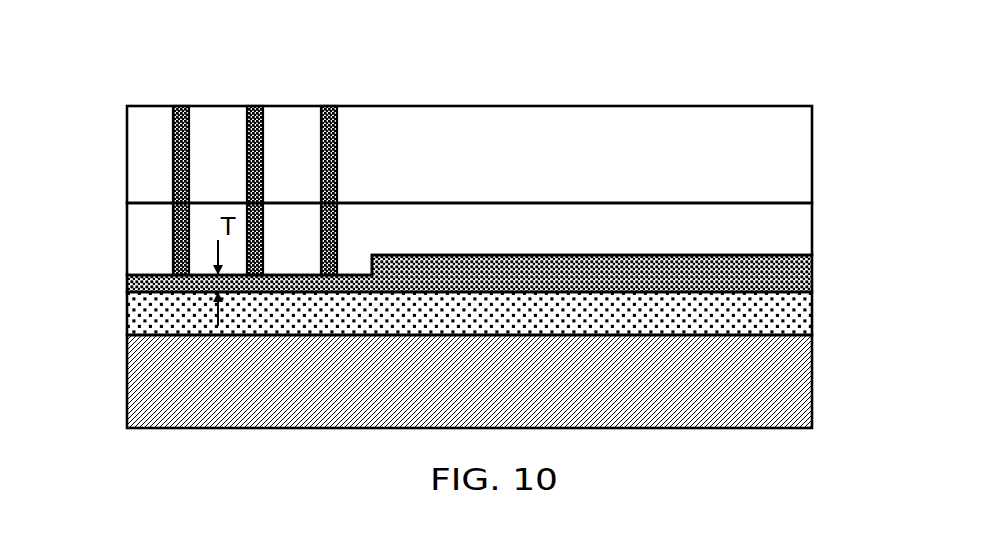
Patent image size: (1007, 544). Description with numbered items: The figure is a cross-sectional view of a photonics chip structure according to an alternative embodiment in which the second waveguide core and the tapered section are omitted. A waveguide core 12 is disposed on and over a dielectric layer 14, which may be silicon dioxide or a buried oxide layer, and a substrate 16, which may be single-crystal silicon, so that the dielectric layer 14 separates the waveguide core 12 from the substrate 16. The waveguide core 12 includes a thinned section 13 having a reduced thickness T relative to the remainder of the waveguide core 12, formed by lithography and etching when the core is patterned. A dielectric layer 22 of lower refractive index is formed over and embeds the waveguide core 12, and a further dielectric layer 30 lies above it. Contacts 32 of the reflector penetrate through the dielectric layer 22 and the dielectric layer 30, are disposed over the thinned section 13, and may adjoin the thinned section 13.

The thinned section 13 is at (201, 149).
The contacts 32 is at (183, 190).
The dielectric layer 30 is at (152, 180).
The dielectric layer 22 is at (152, 232).
The waveguide core 12 is at (758, 276).
The dielectric layer 14 is at (763, 313).
The substrate 16 is at (160, 386).